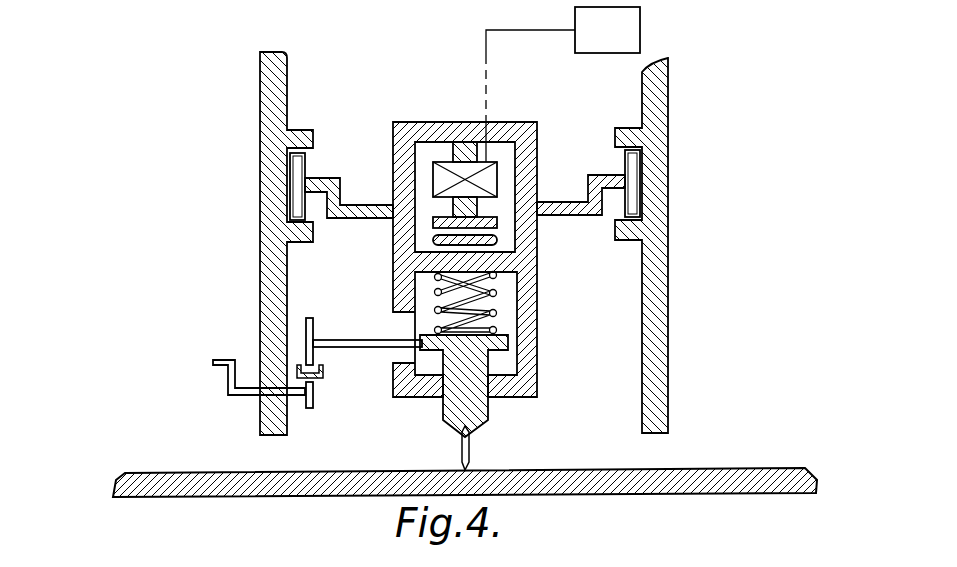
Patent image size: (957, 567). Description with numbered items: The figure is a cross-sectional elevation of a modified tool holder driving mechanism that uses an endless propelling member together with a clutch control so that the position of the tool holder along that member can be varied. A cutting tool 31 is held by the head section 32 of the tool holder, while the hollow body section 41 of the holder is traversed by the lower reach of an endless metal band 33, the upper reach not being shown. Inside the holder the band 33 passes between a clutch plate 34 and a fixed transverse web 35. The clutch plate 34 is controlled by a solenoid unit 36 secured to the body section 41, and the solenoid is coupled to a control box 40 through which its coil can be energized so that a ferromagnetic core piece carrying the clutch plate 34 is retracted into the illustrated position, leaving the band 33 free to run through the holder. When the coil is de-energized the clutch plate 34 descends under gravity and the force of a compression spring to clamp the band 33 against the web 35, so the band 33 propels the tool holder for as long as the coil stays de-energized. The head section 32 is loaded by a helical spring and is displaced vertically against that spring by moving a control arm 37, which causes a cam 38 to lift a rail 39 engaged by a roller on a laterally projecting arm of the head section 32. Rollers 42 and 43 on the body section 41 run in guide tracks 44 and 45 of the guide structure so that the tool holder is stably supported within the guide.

The cutting tool 31 is at (470, 457).
The head section 32 is at (490, 412).
The endless metal band 33 is at (497, 238).
The clutch plate 34 is at (433, 222).
The fixed transverse web 35 is at (495, 262).
The solenoid unit 36 is at (435, 172).
The control arm 37 is at (238, 397).
The cam 38 is at (313, 400).
The rail 39 is at (323, 372).
The control box 40 is at (618, 39).
The hollow body section 41 is at (537, 147).
The roller 42 is at (640, 174).
The roller 43 is at (287, 177).
The guide track 44 is at (642, 221).
The guide track 45 is at (287, 223).